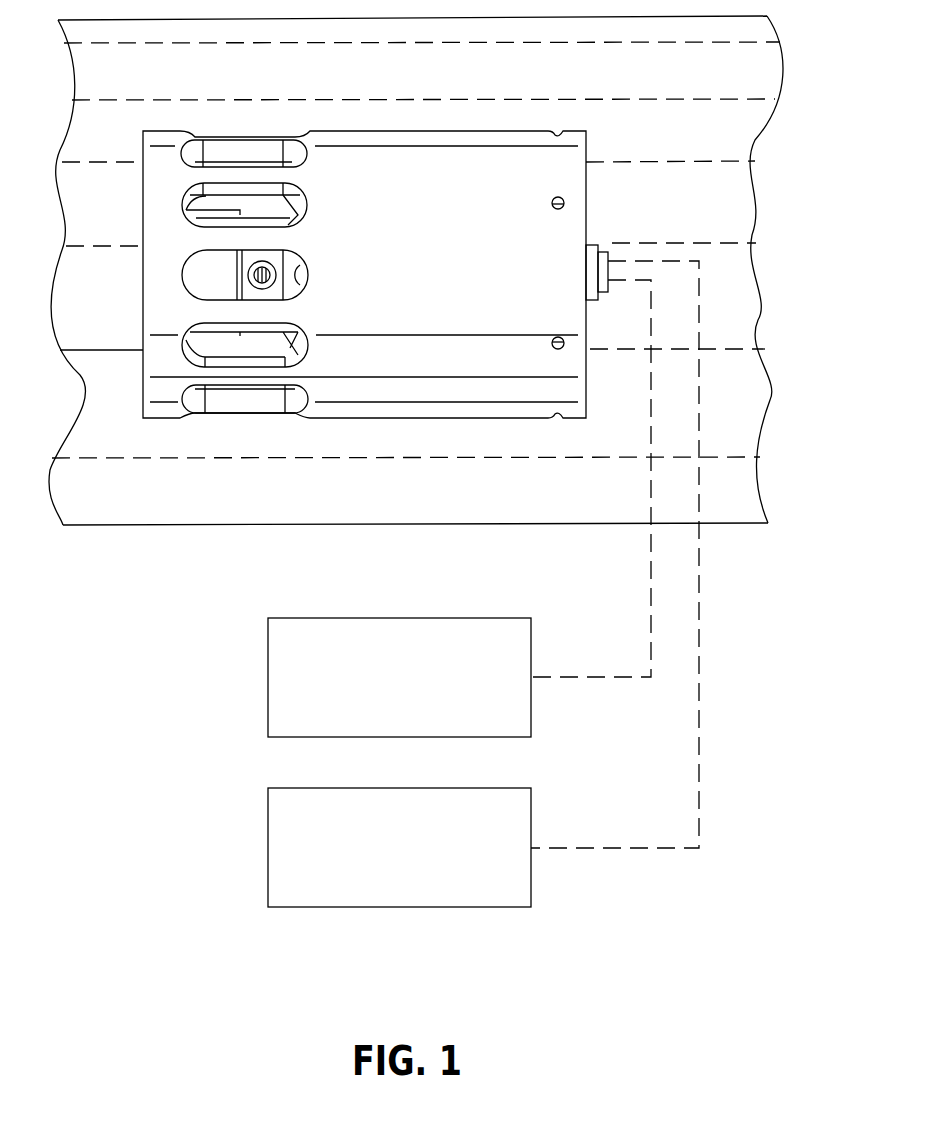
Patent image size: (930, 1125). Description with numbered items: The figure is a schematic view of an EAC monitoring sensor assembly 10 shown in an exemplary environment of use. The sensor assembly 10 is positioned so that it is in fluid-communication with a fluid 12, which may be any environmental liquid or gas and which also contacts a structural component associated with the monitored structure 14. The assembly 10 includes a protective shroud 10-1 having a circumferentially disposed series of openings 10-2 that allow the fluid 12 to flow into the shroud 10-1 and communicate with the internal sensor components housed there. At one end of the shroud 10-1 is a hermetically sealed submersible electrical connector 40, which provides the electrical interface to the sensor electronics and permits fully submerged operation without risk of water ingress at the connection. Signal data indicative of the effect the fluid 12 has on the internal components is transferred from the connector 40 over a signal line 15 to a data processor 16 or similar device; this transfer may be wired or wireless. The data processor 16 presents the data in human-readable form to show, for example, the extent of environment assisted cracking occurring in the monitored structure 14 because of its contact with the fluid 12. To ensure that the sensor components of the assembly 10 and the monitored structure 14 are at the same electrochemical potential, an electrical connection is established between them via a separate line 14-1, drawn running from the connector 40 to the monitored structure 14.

The EAC monitoring sensor assembly 10 is at (364, 279).
The protective shroud 10-1 is at (468, 232).
The openings 10-2 is at (245, 192).
The fluid 12 is at (712, 81).
The monitored structure 14 is at (266, 676).
The line 14-1 is at (665, 568).
The signal line 15 is at (688, 706).
The data processor 16 is at (266, 850).
The hermetically sealed submersible electrical connector 40 is at (597, 262).